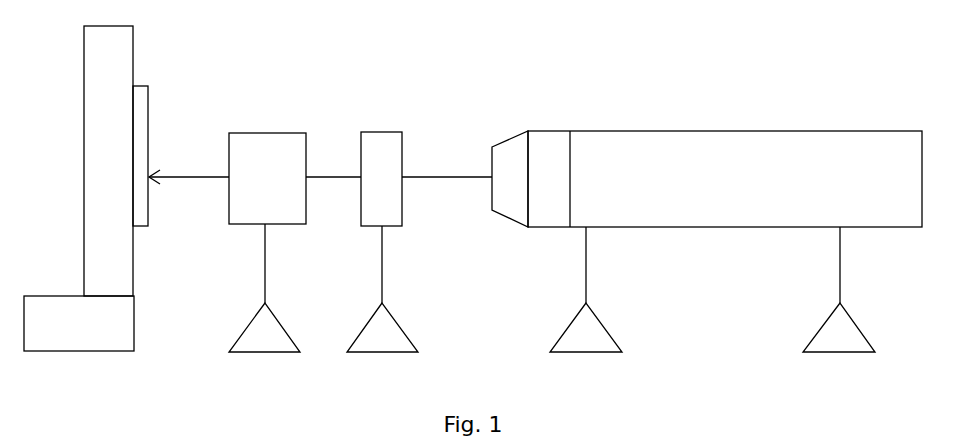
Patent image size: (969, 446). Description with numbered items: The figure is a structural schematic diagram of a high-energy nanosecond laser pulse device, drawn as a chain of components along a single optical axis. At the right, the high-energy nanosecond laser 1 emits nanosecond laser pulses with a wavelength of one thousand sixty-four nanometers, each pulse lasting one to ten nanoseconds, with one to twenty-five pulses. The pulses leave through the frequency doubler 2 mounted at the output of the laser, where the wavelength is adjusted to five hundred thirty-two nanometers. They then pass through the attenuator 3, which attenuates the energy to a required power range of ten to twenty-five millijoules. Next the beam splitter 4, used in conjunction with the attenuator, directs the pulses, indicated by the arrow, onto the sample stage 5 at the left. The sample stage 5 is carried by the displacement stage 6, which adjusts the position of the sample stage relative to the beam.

The high-energy nanosecond laser 1 is at (725, 241).
The frequency doubler 2 is at (510, 179).
The attenuator 3 is at (382, 242).
The beam splitter 4 is at (267, 242).
The sample stage 5 is at (140, 156).
The displacement stage 6 is at (79, 188).